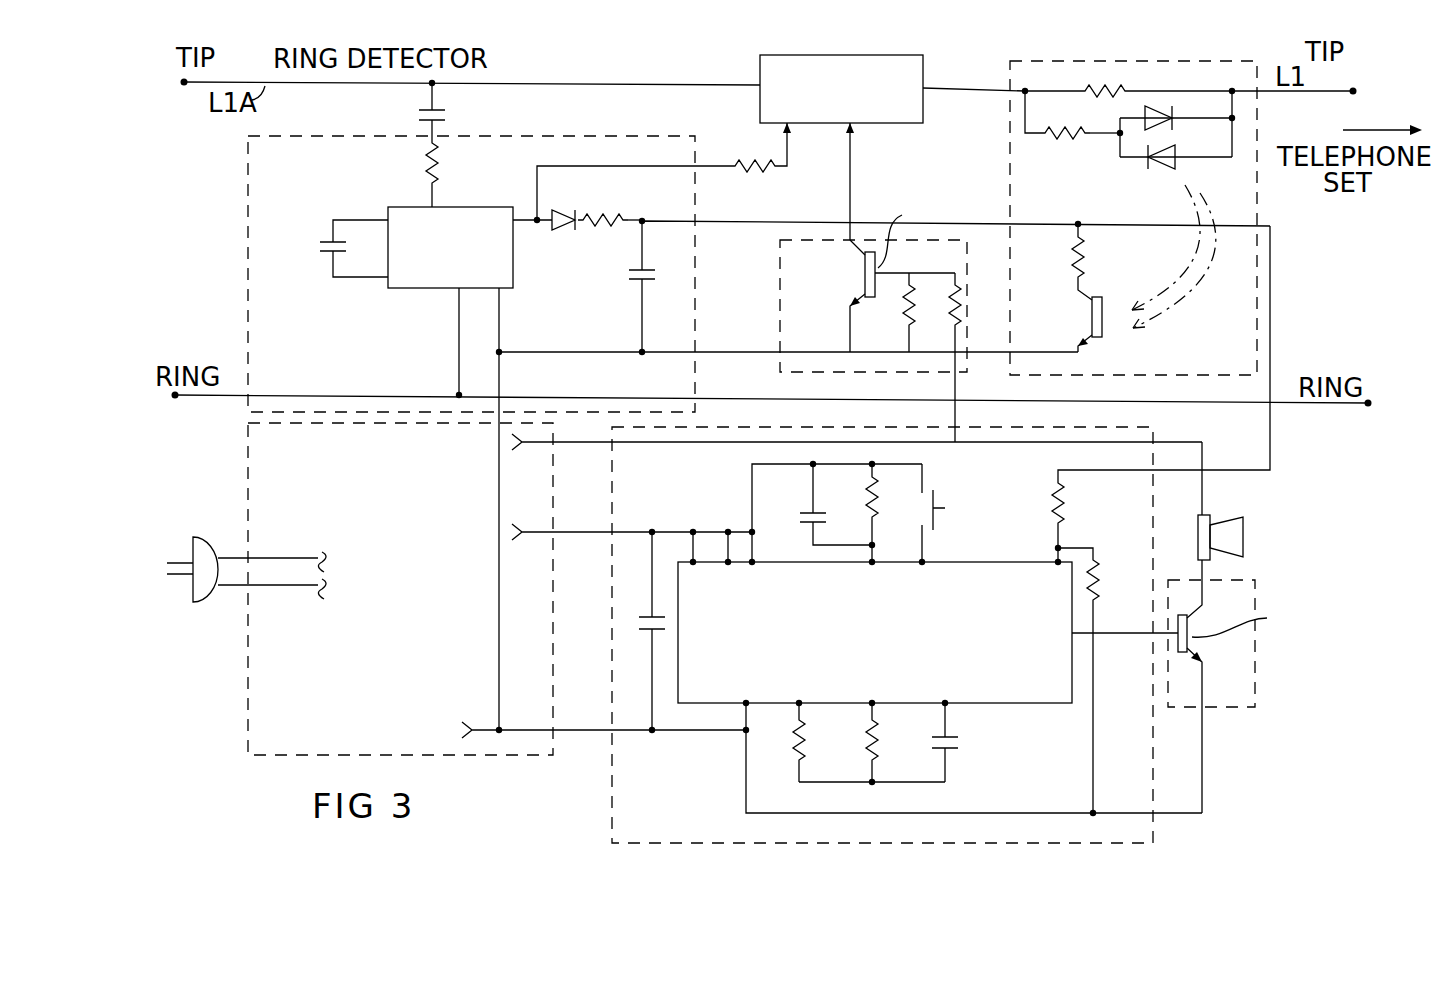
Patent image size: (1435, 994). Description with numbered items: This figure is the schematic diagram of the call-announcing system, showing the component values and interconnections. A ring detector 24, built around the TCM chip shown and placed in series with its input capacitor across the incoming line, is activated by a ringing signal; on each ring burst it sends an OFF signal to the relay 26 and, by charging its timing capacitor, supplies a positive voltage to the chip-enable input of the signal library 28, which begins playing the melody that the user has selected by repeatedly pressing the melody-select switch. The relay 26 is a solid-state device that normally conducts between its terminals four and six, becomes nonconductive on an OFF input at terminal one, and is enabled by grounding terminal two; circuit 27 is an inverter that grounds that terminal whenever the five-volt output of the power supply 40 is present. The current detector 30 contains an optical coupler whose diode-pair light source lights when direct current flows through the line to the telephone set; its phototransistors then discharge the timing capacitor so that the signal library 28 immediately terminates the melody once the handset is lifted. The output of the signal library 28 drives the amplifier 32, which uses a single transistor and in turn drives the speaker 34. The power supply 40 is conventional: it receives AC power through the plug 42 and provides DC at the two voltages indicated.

The ring detector 24 is at (678, 137).
The relay 26 is at (870, 55).
The inverter circuit 27 is at (778, 312).
The signal library 28 is at (1152, 845).
The current detector 30 is at (1256, 141).
The amplifier 32 is at (1255, 592).
The speaker 34 is at (1245, 537).
The power supply 40 is at (248, 462).
The plug 42 is at (205, 601).